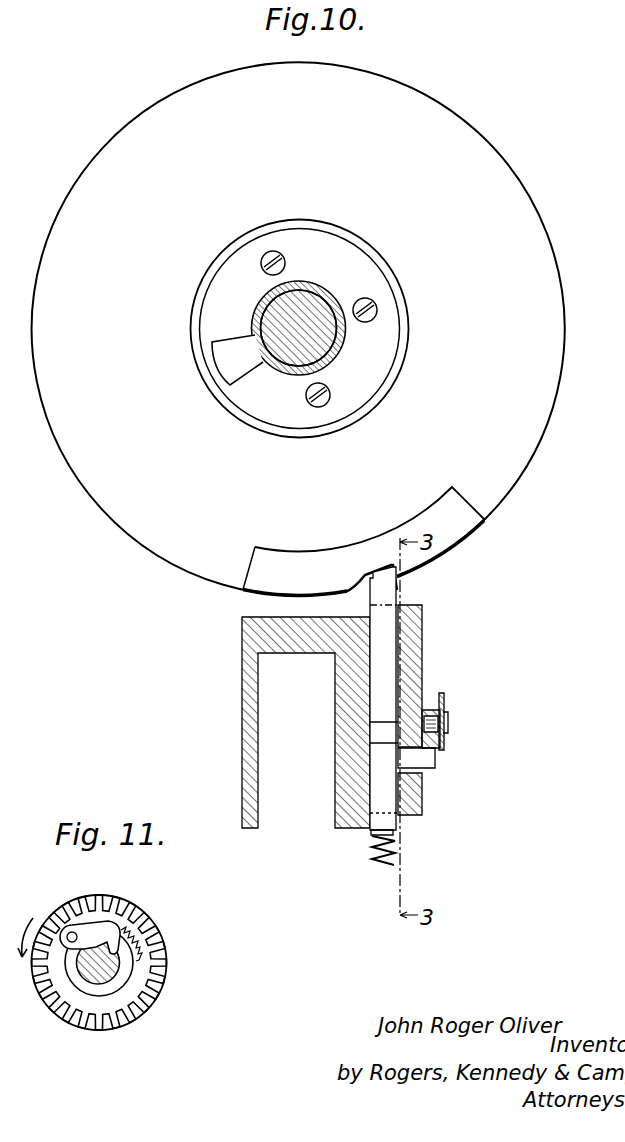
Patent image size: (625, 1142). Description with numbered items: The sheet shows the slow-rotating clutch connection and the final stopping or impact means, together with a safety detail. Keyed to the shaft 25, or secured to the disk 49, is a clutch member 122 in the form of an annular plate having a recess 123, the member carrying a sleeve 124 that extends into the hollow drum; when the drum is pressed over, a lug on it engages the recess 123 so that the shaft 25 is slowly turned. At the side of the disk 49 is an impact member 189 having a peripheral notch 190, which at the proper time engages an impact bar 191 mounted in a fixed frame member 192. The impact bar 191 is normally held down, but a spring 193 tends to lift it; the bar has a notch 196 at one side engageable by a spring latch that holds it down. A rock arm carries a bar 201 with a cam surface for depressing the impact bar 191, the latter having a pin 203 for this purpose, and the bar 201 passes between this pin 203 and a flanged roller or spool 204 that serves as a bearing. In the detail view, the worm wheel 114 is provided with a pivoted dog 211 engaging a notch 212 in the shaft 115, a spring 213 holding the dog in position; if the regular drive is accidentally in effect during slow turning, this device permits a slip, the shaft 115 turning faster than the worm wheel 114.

In FIG. 10, the disk 49 is at (298, 329).
In FIG. 10, the cam plate 189 is at (463, 523).
In FIG. 10, the peripheral notch 190 is at (390, 566).
In FIG. 10, the impact bar 191 is at (383, 597).
In FIG. 10, the fixed frame member 192 is at (422, 641).
In FIG. 10, the spring 193 is at (350, 847).
In FIG. 10, the notch 196 is at (377, 733).
In FIG. 10, the bar 201 is at (443, 745).
In FIG. 10, the pin 203 is at (427, 758).
In FIG. 10, the flanged roller or spool 204 is at (443, 703).
In FIG. 10, the clutch member 122 is at (300, 329).
In FIG. 10, the recess 123 is at (230, 360).
In FIG. 10, the sleeve 124 is at (320, 293).
In FIG. 10, the shaft 25 is at (313, 345).
In FIG. 11, the worm wheel 114 is at (88, 900).
In FIG. 11, the shaft 115 is at (80, 972).
In FIG. 11, the pivoted dog 211 is at (97, 928).
In FIG. 11, the notch 212 is at (112, 973).
In FIG. 11, the spring 213 is at (138, 945).